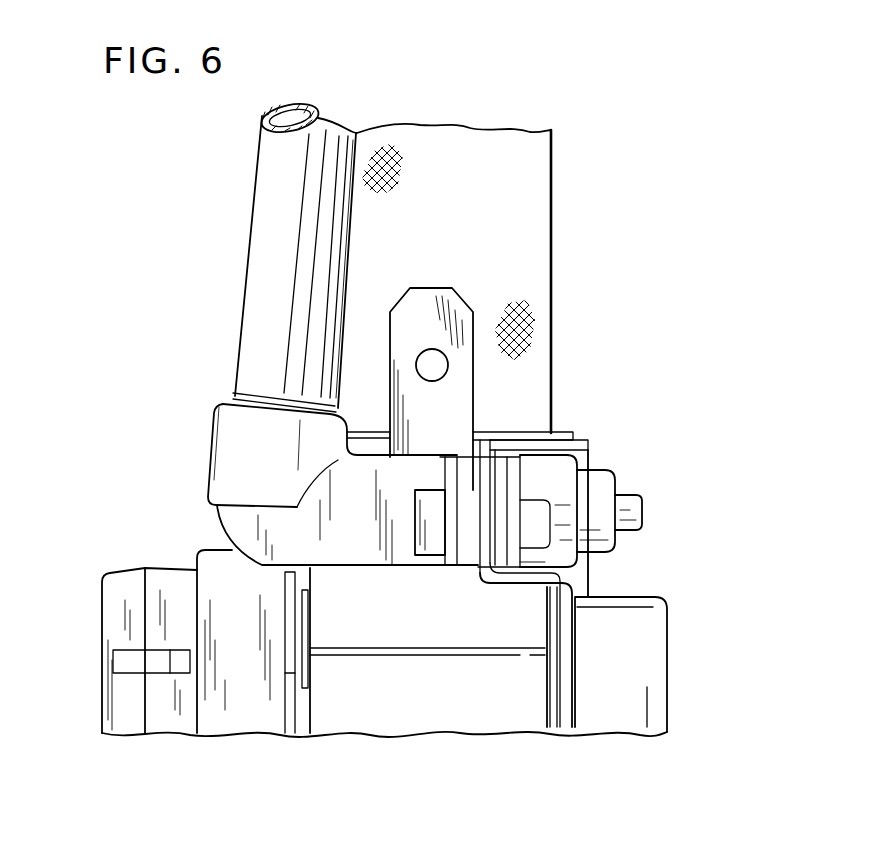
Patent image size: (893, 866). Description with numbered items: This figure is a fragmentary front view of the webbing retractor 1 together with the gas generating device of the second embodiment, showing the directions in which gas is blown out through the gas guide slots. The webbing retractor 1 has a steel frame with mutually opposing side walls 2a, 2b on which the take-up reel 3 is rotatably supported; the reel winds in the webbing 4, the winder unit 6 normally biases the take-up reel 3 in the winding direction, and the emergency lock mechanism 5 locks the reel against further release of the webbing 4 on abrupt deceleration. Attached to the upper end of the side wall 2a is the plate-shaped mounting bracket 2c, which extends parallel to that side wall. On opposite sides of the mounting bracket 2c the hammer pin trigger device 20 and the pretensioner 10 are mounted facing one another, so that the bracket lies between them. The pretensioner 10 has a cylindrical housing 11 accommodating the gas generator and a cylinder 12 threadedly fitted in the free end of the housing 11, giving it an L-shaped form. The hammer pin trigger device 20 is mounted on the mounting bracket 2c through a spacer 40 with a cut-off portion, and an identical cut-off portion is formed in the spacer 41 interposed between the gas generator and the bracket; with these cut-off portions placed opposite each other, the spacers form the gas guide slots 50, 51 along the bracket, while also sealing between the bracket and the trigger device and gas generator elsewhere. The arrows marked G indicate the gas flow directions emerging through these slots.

The webbing retractor 1 is at (677, 593).
The side wall 2a is at (567, 707).
The side wall 2b is at (290, 713).
The mounting bracket 2c is at (479, 576).
The take-up reel 3 is at (415, 700).
The webbing 4 is at (540, 187).
The emergency lock mechanism 5 is at (652, 660).
The winder unit 6 is at (168, 713).
The pretensioner 10 is at (220, 349).
The cylindrical housing 11 is at (237, 452).
The cylinder 12 is at (272, 212).
The hammer pin trigger device 20 is at (630, 470).
The spacer 40 is at (497, 545).
The spacer 41 is at (467, 533).
The gas guide slot 50 is at (507, 500).
The gas guide slot 51 is at (467, 488).
The gap G is at (473, 490).